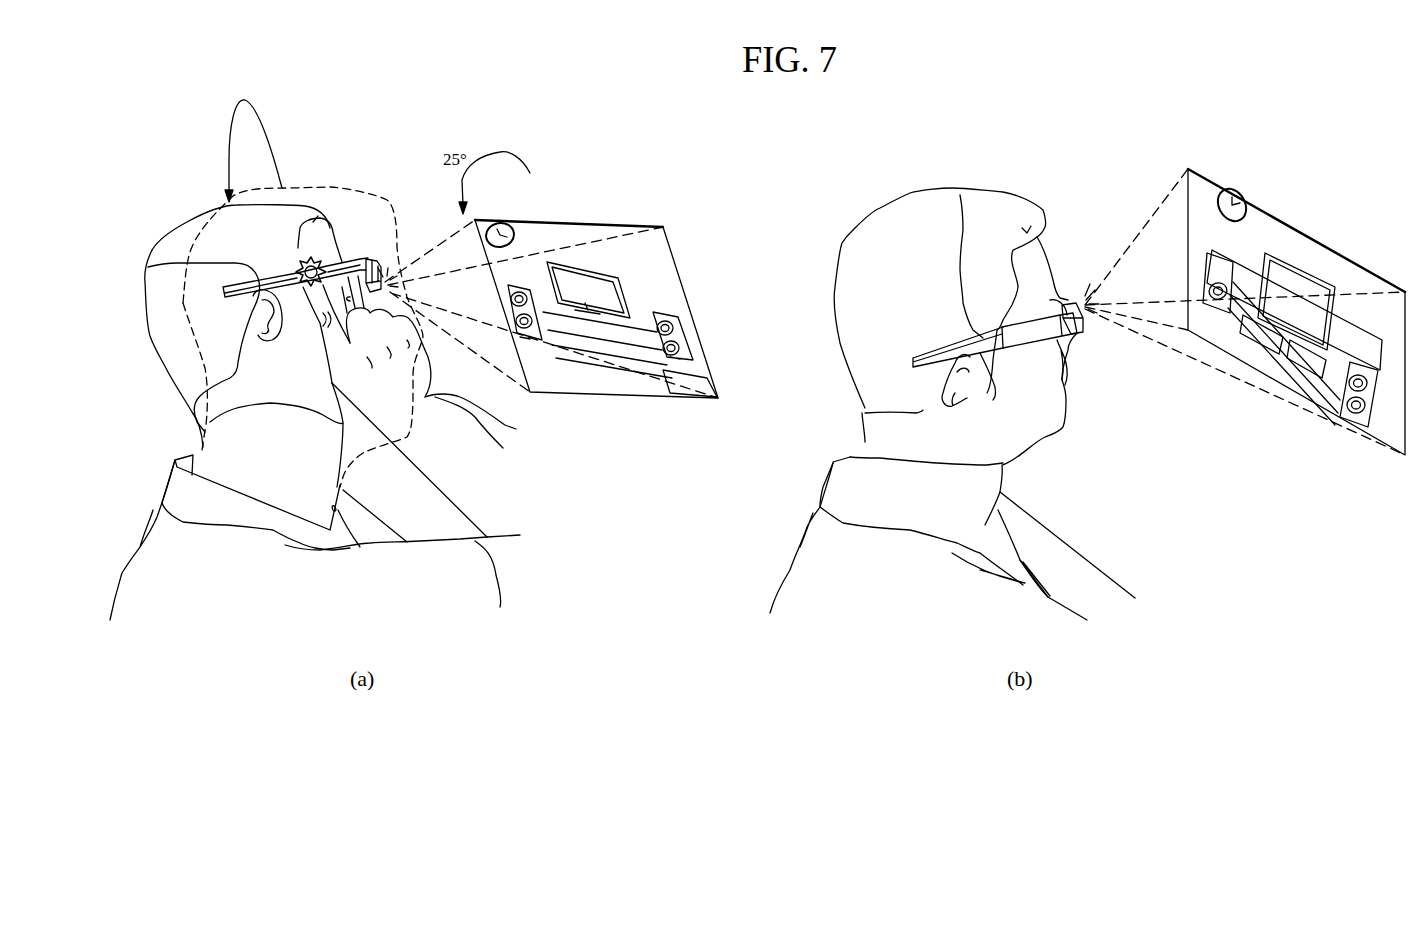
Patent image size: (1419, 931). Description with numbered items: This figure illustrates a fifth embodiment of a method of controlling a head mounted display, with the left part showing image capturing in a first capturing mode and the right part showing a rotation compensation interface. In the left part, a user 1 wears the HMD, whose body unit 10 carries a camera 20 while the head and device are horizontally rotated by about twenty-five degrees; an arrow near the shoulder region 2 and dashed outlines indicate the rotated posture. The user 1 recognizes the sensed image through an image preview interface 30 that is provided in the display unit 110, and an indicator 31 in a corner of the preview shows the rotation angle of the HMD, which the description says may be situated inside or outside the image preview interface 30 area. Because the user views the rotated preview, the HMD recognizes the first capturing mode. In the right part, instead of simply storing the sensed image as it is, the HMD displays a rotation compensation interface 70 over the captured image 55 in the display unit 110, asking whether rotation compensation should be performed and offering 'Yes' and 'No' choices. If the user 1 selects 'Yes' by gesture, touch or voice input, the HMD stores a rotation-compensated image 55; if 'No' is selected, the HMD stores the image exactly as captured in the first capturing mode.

The user 1 is at (182, 234).
The user's hand / body 2 is at (516, 429).
The body unit 10 is at (148, 267).
The camera 20 is at (380, 256).
The image preview interface 30 is at (595, 232).
The rotation angle indicator 31 is at (678, 393).
The image for which rotation compensation is performed 55 is at (1340, 268).
The rotation compensation interface 70 is at (1240, 260).
The display unit 110 is at (545, 219).